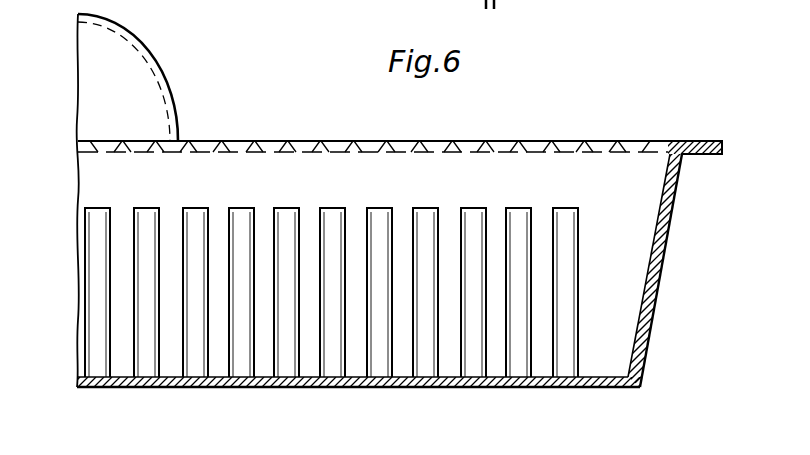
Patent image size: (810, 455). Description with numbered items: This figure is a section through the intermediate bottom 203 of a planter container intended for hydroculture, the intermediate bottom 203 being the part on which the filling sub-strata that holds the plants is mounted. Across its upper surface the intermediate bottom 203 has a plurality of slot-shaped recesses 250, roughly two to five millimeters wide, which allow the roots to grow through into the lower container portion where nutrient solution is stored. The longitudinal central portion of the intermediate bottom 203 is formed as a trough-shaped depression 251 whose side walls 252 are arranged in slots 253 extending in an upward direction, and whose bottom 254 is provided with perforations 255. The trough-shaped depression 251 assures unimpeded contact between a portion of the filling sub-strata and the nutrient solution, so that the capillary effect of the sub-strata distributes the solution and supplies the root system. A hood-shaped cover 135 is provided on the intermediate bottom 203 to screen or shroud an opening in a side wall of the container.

The hood-shaped cover 135 is at (140, 51).
The intermediate bottom 203 is at (469, 133).
The slot-shaped recesses 250 is at (383, 143).
The trough-shaped depression 251 is at (638, 267).
The side walls 252 is at (92, 185).
The slots 253 is at (568, 222).
The bottom 254 is at (595, 388).
The perforations 255 is at (387, 387).